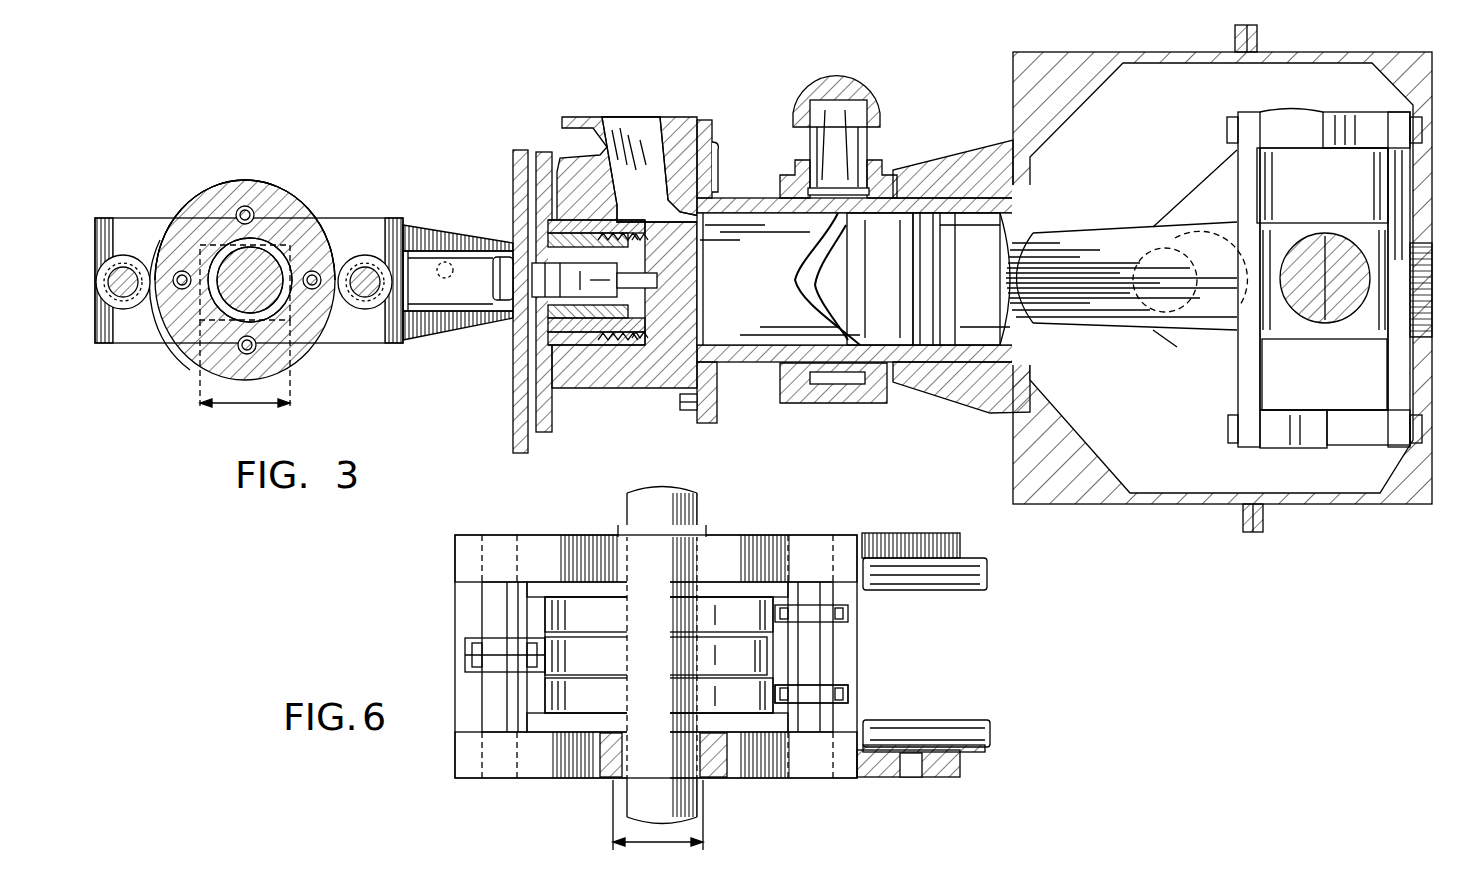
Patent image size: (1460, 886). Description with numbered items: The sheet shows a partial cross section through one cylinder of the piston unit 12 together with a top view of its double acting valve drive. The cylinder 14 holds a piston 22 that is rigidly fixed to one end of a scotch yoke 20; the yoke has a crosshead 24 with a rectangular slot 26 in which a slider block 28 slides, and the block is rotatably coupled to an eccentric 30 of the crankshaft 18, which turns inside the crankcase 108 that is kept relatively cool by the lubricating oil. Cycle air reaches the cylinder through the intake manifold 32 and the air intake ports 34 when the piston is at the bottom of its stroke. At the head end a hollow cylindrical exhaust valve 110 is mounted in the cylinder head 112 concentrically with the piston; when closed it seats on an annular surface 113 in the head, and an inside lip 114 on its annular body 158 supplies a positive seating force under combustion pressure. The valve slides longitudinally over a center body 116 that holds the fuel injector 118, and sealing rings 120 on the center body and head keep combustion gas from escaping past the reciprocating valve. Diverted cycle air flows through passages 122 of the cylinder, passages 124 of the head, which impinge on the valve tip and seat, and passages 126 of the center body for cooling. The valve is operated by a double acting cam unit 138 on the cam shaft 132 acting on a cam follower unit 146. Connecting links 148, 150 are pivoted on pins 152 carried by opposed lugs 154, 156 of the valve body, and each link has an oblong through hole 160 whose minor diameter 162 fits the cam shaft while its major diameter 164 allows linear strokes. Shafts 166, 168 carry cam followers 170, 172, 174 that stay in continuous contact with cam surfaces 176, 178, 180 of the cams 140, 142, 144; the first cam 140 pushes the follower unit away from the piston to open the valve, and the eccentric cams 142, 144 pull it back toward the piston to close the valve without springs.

In FIG. 3, the piston unit 12 is at (843, 412).
In FIG. 3, the cylinder 14 is at (753, 218).
In FIG. 3, the crankshaft 18 is at (1274, 245).
In FIG. 3, the scotch yoke 20 is at (1180, 190).
In FIG. 3, the piston 22 is at (892, 275).
In FIG. 3, the crosshead 24 is at (1283, 448).
In FIG. 3, the rectangular slot 26 is at (1285, 368).
In FIG. 3, the slider block 28 is at (1360, 340).
In FIG. 3, the eccentric 30 is at (1158, 240).
In FIG. 3, the intake manifold 32 is at (860, 128).
In FIG. 3, the air intake ports 34 is at (800, 280).
In FIG. 3, the crankcase 108 is at (1135, 505).
In FIG. 3, the exhaust valve 110 is at (600, 192).
In FIG. 3, the cylinder head 112 is at (602, 392).
In FIG. 3, the annular surface 113 is at (676, 206).
In FIG. 3, the inside lip 114 is at (686, 404).
In FIG. 3, the center body 116 is at (606, 342).
In FIG. 3, the fuel injector 118 is at (660, 281).
In FIG. 3, the sealing rings 120 is at (643, 344).
In FIG. 3, the passages 122 is at (762, 375).
In FIG. 3, the passages 124 is at (714, 165).
In FIG. 3, the passages 126 is at (548, 236).
In FIG. 3, the cam shaft 132 is at (212, 352).
In FIG. 6, the cam shaft 132 is at (700, 520).
In FIG. 3, the double acting cam unit 138 is at (335, 160).
In FIG. 6, the double acting cam unit 138 is at (405, 630).
In FIG. 3, the first cam 140 is at (240, 182).
In FIG. 6, the first cam 140 is at (780, 650).
In FIG. 3, the cam 142 is at (246, 178).
In FIG. 6, the cam 142 is at (742, 590).
In FIG. 6, the cam 144 is at (840, 705).
In FIG. 3, the cam follower unit 146 is at (395, 345).
In FIG. 6, the cam follower unit 146 is at (448, 748).
In FIG. 3, the connecting link 148 is at (165, 228).
In FIG. 6, the connecting link 148 is at (537, 534).
In FIG. 6, the connecting link 150 is at (547, 780).
In FIG. 3, the pin 152 is at (447, 262).
In FIG. 6, the pin 152 is at (885, 545).
In FIG. 3, the projecting lug 154 is at (452, 246).
In FIG. 6, the projecting lug 154 is at (962, 590).
In FIG. 6, the projecting lug 156 is at (968, 720).
In FIG. 3, the annular body 158 is at (498, 300).
In FIG. 3, the through hole 160 is at (316, 225).
In FIG. 6, the through hole 160 is at (606, 545).
In FIG. 3, the minor diameter 162 is at (290, 330).
In FIG. 3, the major diameter 164 is at (245, 368).
In FIG. 6, the major diameter 164 is at (658, 817).
In FIG. 3, the shaft 166 is at (125, 268).
In FIG. 6, the shaft 166 is at (482, 706).
In FIG. 3, the shaft 168 is at (366, 268).
In FIG. 6, the shaft 168 is at (835, 660).
In FIG. 3, the cam follower 170 is at (122, 300).
In FIG. 6, the cam follower 170 is at (455, 672).
In FIG. 3, the cam follower 172 is at (362, 300).
In FIG. 6, the cam follower 172 is at (850, 614).
In FIG. 6, the cam follower 174 is at (850, 690).
In FIG. 3, the cam surface 176 is at (247, 280).
In FIG. 6, the cam surface 176 is at (688, 654).
In FIG. 6, the cam surface 178 is at (688, 612).
In FIG. 6, the cam surface 180 is at (688, 695).